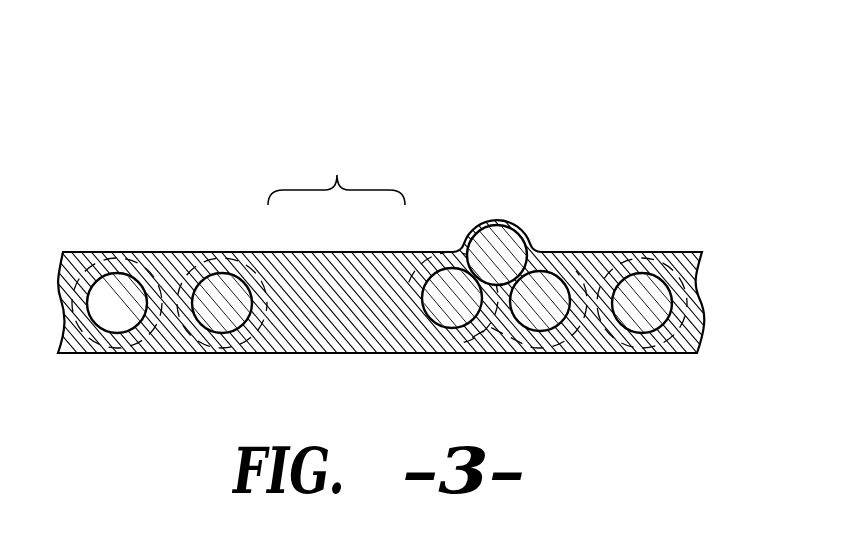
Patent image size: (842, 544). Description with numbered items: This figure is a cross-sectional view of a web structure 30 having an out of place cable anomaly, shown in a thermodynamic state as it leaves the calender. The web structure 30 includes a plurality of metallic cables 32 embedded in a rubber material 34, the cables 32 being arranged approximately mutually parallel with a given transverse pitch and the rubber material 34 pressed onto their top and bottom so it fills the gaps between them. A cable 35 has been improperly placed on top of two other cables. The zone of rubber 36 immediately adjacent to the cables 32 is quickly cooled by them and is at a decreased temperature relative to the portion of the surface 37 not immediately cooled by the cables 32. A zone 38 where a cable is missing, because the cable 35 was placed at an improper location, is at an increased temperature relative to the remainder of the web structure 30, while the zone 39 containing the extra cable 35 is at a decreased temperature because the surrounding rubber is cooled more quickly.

The web structure 30 is at (416, 190).
The metallic cables 32 is at (652, 298).
The rubber material 34 is at (673, 252).
The cable 35 is at (553, 223).
The zone of rubber 36 is at (203, 252).
The portion of the surface 37 is at (145, 252).
The zone 38 is at (336, 171).
The zone 39 is at (524, 243).